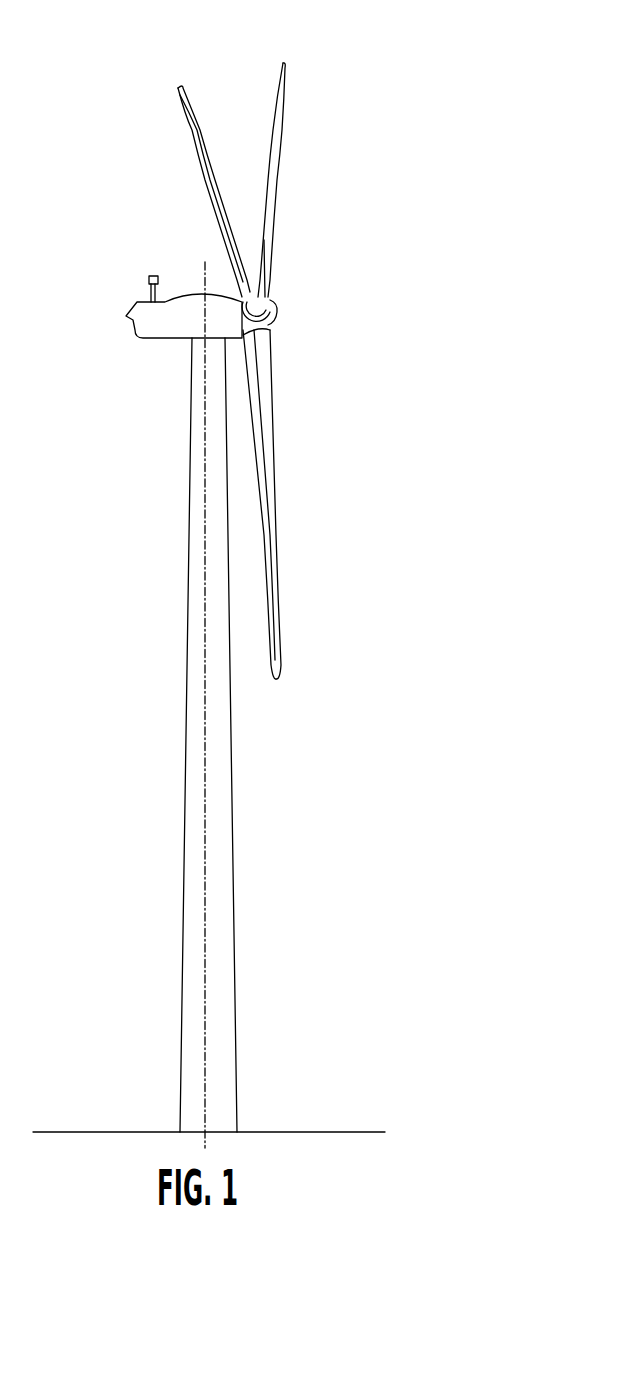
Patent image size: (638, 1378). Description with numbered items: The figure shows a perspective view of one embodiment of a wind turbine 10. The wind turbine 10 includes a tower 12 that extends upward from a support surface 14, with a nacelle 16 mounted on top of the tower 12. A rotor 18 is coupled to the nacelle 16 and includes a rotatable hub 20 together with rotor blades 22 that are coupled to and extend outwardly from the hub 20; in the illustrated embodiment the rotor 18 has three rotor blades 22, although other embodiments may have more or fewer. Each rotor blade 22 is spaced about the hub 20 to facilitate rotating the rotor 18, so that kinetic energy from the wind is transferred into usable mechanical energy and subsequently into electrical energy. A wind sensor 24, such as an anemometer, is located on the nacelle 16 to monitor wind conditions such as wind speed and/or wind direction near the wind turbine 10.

The wind turbine 10 is at (398, 89).
The tower 12 is at (183, 848).
The support surface 14 is at (113, 1130).
The nacelle 16 is at (163, 340).
The rotor 18 is at (303, 335).
The rotatable hub 20 is at (278, 313).
The rotor blade 22 is at (197, 152).
The wind sensor 24 is at (143, 263).